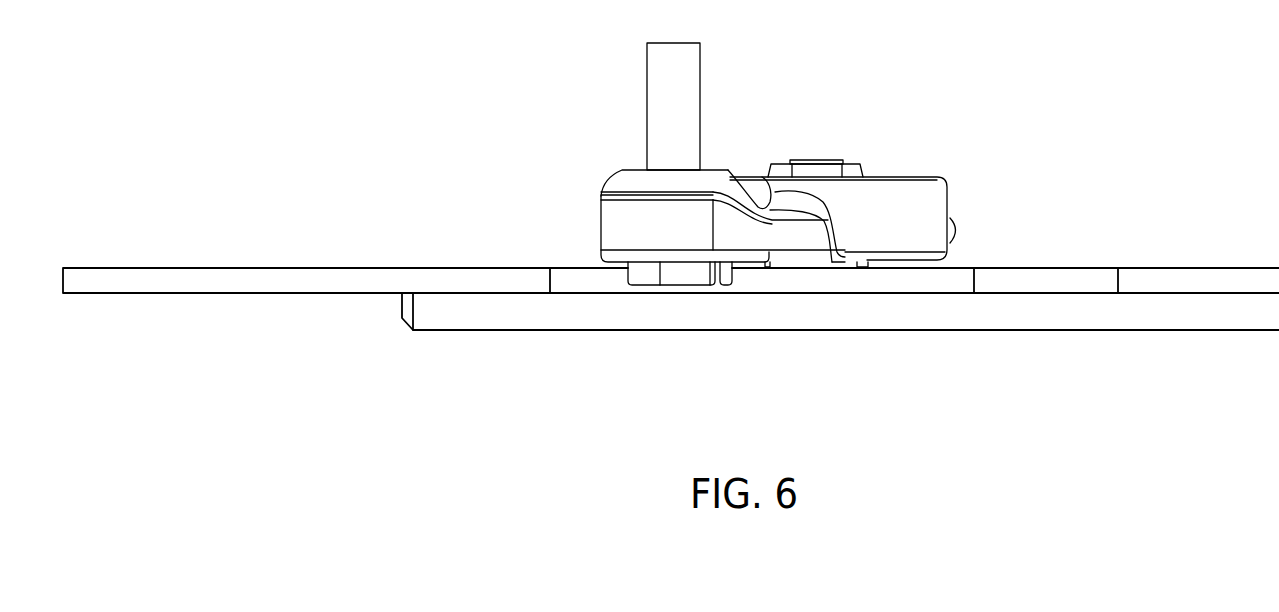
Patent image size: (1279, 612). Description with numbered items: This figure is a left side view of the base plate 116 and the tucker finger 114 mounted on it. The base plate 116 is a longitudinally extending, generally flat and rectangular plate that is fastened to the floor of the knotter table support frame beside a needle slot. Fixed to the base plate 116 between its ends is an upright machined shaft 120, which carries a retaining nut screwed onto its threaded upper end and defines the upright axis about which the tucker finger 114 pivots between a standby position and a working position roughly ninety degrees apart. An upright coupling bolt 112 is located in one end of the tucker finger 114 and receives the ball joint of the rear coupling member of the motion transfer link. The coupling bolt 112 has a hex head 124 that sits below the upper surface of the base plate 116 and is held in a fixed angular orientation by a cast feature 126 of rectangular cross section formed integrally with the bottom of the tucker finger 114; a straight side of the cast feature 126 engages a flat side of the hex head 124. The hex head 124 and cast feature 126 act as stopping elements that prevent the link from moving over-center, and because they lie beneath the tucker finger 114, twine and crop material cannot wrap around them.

The upright coupling bolt 112 is at (692, 100).
The tucker finger 114 is at (958, 195).
The base plate 116 is at (1236, 261).
The upright machined shaft 120 is at (825, 158).
The hex head 124 is at (643, 275).
The cast feature 126 is at (728, 273).